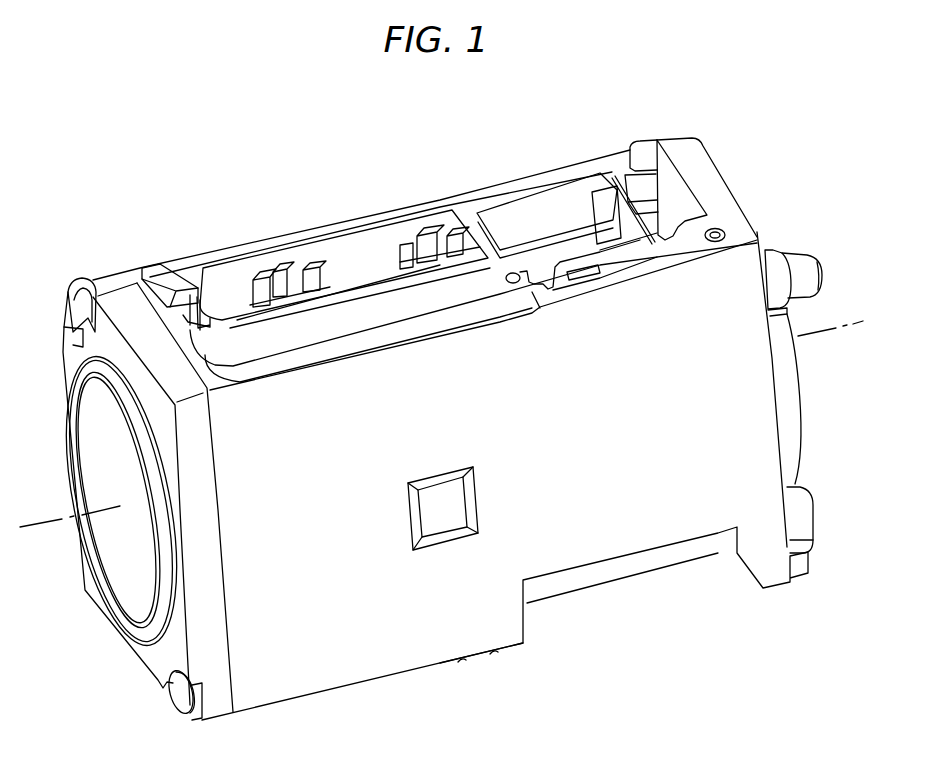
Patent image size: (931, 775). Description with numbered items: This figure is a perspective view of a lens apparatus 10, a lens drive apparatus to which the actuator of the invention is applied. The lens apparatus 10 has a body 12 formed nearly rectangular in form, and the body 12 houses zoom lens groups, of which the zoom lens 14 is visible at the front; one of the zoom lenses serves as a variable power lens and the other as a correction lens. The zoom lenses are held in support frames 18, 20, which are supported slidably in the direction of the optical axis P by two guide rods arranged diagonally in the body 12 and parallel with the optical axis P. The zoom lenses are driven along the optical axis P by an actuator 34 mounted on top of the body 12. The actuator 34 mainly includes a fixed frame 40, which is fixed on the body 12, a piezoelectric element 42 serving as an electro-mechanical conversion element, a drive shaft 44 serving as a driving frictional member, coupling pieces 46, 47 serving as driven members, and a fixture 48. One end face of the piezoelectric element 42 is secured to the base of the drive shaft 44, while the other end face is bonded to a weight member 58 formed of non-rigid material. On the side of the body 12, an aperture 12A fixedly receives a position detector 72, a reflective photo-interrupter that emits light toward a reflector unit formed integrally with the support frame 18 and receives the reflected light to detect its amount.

The lens apparatus 10 is at (382, 188).
The body 12 is at (388, 666).
The aperture 12A is at (465, 531).
The zoom lens 14 is at (97, 472).
The support frame 18 is at (72, 386).
The support frame 20 is at (788, 395).
The actuator 34 is at (362, 250).
The fixed frame 40 is at (470, 209).
The piezoelectric element 42 is at (541, 238).
The drive shaft 44 is at (343, 290).
The coupling piece 46 is at (258, 278).
The coupling piece 47 is at (420, 228).
The fixture 48 is at (612, 178).
The weight member 58 is at (606, 200).
The position detector 72 is at (443, 518).
The optical axis P is at (40, 523).